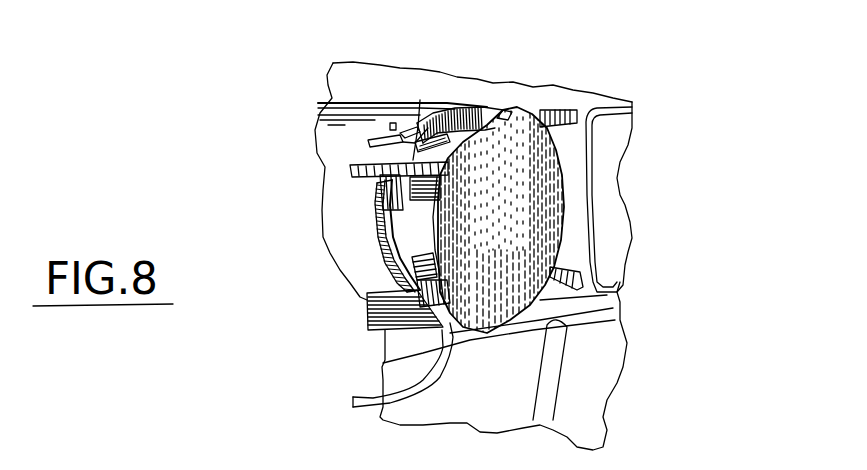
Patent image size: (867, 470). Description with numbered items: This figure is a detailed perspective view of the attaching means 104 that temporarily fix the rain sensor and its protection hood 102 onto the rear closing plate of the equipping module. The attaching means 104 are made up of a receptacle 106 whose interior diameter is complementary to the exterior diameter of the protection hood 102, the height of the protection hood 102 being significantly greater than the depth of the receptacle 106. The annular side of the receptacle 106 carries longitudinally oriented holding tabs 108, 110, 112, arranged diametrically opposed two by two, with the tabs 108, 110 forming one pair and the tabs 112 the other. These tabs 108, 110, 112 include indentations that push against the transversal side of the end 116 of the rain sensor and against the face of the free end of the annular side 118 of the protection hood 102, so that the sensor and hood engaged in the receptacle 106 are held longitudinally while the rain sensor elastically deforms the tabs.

The protection hood 102 is at (387, 282).
The attaching means 104 is at (370, 337).
The receptacle 106 is at (375, 237).
The holding tab 108 is at (418, 167).
The holding tab 110 is at (573, 263).
The holding tab 112 is at (393, 123).
The end of the rain sensor 116 is at (540, 200).
The annular side of the protection hood 118 is at (377, 183).